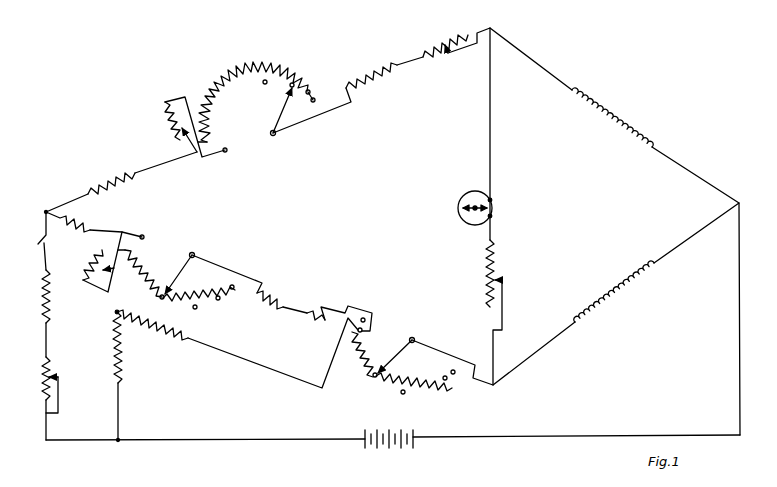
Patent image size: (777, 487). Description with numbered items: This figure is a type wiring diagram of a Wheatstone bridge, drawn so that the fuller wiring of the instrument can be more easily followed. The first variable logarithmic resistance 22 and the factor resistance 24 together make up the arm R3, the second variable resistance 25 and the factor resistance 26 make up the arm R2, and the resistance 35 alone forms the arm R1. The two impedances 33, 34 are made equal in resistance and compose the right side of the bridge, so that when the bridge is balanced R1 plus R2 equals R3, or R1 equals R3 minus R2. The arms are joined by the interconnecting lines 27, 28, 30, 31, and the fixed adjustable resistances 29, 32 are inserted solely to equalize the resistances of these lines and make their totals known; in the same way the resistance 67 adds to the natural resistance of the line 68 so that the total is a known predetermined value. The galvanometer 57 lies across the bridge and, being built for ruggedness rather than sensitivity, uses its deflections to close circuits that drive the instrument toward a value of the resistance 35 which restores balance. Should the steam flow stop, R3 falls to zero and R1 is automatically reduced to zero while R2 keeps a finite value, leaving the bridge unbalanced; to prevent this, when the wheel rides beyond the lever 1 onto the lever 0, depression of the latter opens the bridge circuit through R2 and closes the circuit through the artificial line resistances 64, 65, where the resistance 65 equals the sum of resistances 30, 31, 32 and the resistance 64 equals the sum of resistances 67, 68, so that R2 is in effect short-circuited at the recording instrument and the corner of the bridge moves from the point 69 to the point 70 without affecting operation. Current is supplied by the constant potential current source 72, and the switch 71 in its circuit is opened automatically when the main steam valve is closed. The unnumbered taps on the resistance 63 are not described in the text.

The first variable logarithmic resistance 22 is at (257, 99).
The factor resistance 24 is at (184, 127).
The second variable resistance 25 is at (182, 292).
The factor resistance 26 is at (85, 265).
The interconnecting line resistance 27 is at (110, 182).
The interconnecting line resistance 28 is at (371, 75).
The fixed adjustable resistance 29 is at (445, 45).
The interconnecting line resistance 30 is at (68, 230).
The interconnecting line resistance 31 is at (270, 306).
The fixed adjustable resistance 32 is at (314, 324).
The impedance 33 is at (612, 117).
The impedance 34 is at (614, 291).
The resistance 35 is at (426, 388).
The galvanometer 57 is at (461, 208).
The variable resistance 63 is at (481, 312).
The artificial line resistance 64 is at (130, 346).
The artificial line resistance 65 is at (152, 333).
The resistance 67 is at (36, 385).
The line 68 is at (34, 296).
The bridge corner point 69 is at (36, 213).
The bridge corner point 70 is at (112, 451).
The switch 71 is at (29, 241).
The constant potential current source 72 is at (389, 448).
The lever 0 is at (386, 312).
The lever 1 is at (363, 341).
The bridge arm resistance R1 is at (398, 358).
The bridge arm resistance R2 is at (184, 274).
The bridge arm resistance R3 is at (273, 109).